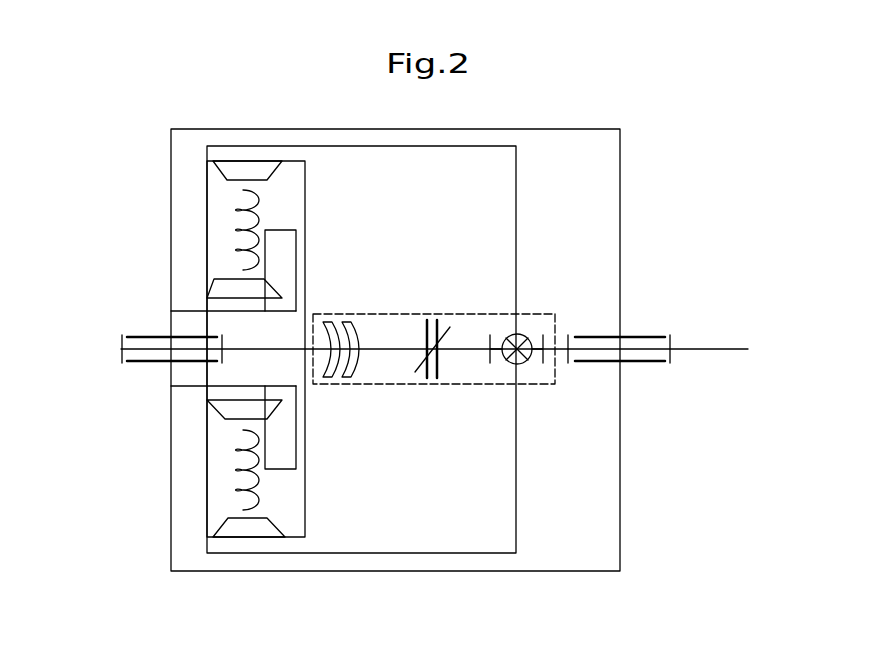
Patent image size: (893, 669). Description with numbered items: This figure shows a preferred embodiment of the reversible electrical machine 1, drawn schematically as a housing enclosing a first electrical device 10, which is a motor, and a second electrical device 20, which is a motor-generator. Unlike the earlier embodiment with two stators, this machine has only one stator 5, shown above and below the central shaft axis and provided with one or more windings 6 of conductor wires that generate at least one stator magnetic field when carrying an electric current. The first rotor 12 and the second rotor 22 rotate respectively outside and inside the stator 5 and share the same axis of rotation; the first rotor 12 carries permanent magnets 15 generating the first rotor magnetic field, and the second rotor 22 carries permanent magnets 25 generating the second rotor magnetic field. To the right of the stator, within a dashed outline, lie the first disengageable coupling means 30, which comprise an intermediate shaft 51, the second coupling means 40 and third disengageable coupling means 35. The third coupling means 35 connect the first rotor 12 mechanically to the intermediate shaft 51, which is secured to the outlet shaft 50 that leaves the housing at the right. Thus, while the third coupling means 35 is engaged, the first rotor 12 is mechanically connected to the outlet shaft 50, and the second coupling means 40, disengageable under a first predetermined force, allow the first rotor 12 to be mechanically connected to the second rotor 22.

The reversible electrical machine 1 is at (655, 181).
The second rotor 22 is at (516, 218).
The second electrical device 20 is at (197, 281).
The stator 5 is at (273, 228).
The first rotor 12 is at (305, 263).
The permanent magnets 15 is at (243, 170).
The permanent magnets 25 is at (233, 283).
The windings 6 is at (247, 212).
The first electrical device 10 is at (310, 522).
The outlet shaft 50 is at (695, 348).
The first disengageable coupling means 30 is at (538, 314).
The third disengageable coupling means 35 is at (343, 322).
The intermediate shaft 51 is at (390, 350).
The second coupling means 40 is at (520, 364).